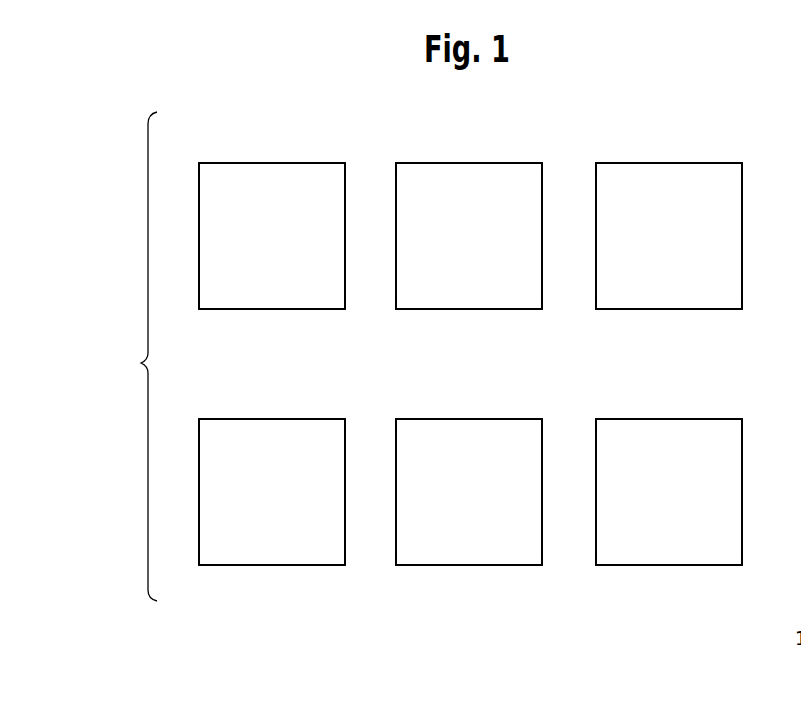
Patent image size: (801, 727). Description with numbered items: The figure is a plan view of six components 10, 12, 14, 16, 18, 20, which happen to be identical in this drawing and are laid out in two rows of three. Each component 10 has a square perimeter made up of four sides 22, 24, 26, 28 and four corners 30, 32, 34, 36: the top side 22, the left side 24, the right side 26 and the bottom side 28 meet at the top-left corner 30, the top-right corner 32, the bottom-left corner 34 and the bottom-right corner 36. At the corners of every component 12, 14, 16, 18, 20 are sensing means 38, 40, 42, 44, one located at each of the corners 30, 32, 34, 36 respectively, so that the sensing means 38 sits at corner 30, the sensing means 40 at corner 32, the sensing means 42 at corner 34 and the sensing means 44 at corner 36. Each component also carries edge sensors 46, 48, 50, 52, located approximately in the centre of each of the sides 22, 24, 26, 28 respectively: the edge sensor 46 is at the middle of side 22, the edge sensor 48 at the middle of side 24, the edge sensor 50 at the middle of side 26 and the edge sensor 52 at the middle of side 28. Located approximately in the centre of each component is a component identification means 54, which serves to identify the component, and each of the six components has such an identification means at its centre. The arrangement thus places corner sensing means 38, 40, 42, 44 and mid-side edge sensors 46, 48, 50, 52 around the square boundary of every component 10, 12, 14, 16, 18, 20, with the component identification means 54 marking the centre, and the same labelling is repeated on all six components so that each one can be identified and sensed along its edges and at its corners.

The component 10 is at (222, 139).
The component 12 is at (464, 204).
The component 14 is at (664, 204).
The component 16 is at (267, 460).
The component 18 is at (464, 460).
The component 20 is at (664, 460).
The side 22 is at (278, 163).
The side 24 is at (199, 233).
The side 26 is at (345, 233).
The side 28 is at (275, 309).
The corner 30 is at (199, 163).
The corner 32 is at (345, 163).
The corner 34 is at (199, 309).
The corner 36 is at (345, 309).
The sensing means 38 is at (410, 304).
The sensing means 40 is at (531, 304).
The sensing means 42 is at (410, 426).
The sensing means 44 is at (531, 426).
The edge sensor 46 is at (475, 304).
The edge sensor 48 is at (410, 363).
The edge sensor 50 is at (531, 363).
The edge sensor 52 is at (475, 426).
The component identification means 54 is at (475, 363).